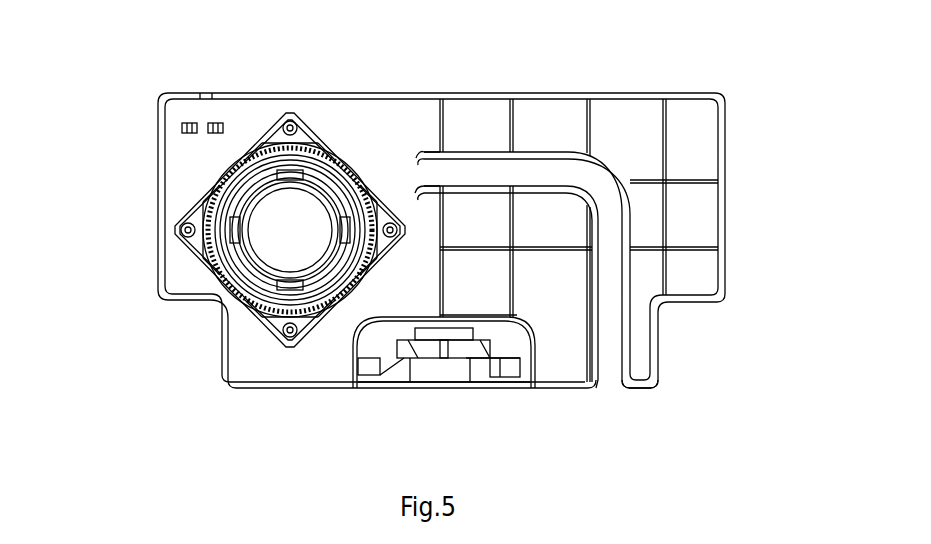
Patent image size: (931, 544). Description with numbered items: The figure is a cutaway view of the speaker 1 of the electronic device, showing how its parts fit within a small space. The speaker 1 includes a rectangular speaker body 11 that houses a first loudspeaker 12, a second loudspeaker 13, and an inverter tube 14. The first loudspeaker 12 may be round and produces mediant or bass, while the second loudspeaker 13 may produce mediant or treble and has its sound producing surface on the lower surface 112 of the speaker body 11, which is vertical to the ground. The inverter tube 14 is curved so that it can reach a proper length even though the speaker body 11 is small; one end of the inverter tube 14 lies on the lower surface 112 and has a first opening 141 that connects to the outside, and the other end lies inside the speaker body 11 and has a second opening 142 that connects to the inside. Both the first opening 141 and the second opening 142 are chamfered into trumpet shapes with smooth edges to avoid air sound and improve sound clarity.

The speaker 1 is at (740, 74).
The speaker body 11 is at (158, 123).
The lower surface 112 is at (278, 392).
The first loudspeaker 12 is at (273, 223).
The second loudspeaker 13 is at (423, 370).
The inverter tube 14 is at (630, 290).
The first opening 141 is at (610, 380).
The second opening 142 is at (425, 160).